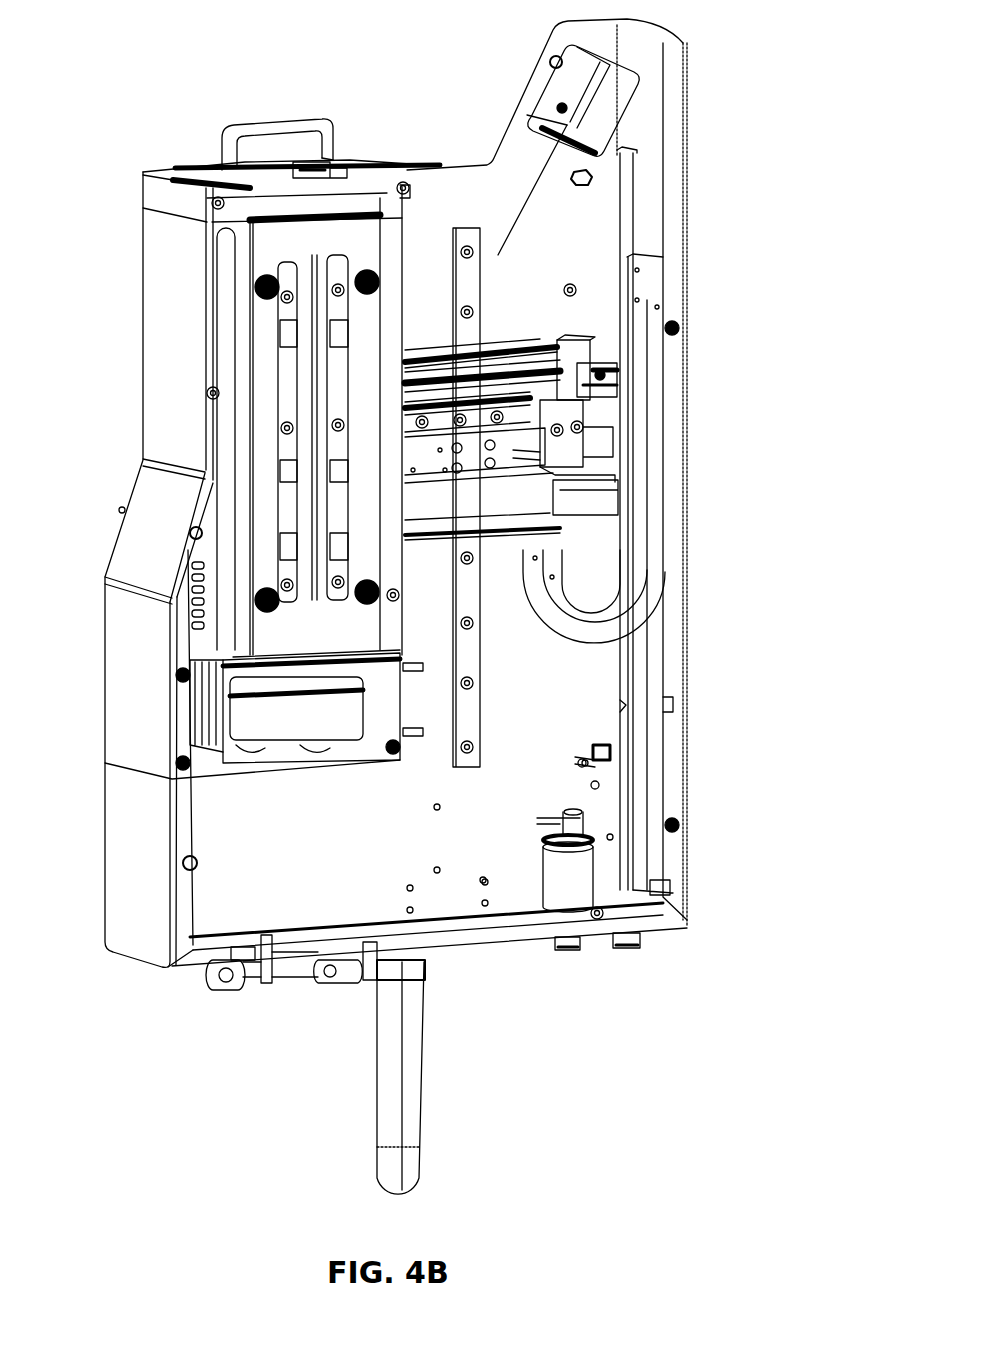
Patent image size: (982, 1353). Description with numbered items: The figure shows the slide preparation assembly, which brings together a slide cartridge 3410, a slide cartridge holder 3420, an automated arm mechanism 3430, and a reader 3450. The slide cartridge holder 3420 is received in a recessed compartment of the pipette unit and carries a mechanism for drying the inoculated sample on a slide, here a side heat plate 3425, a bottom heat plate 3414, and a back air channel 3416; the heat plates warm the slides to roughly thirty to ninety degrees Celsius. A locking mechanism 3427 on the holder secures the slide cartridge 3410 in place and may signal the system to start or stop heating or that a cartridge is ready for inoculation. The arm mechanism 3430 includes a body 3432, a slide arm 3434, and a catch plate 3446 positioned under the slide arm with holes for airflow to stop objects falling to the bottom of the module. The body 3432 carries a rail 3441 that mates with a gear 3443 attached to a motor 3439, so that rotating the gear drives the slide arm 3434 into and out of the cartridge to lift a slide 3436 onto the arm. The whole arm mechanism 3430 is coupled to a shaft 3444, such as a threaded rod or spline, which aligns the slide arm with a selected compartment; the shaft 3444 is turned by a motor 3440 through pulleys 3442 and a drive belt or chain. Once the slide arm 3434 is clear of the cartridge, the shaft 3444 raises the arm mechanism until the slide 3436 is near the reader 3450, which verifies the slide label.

The slide cartridge 3410 is at (247, 170).
The bottom heat plate 3414 is at (233, 718).
The back air channel 3416 is at (223, 418).
The slide cartridge holder 3420 is at (177, 185).
The side heat plate 3425 is at (260, 350).
The locking mechanism 3427 is at (340, 157).
The arm mechanism 3430 is at (420, 293).
The body 3432 is at (540, 362).
The slide arm 3434 is at (457, 353).
The slide 3436 is at (432, 352).
The motor 3439 is at (603, 420).
The rail 3441 is at (477, 380).
The gear 3443 is at (607, 370).
The shaft 3444 is at (632, 808).
The catch plate 3446 is at (477, 533).
The reader 3450 is at (620, 73).
The motor 3440 is at (567, 887).
The pulleys 3442 is at (567, 955).